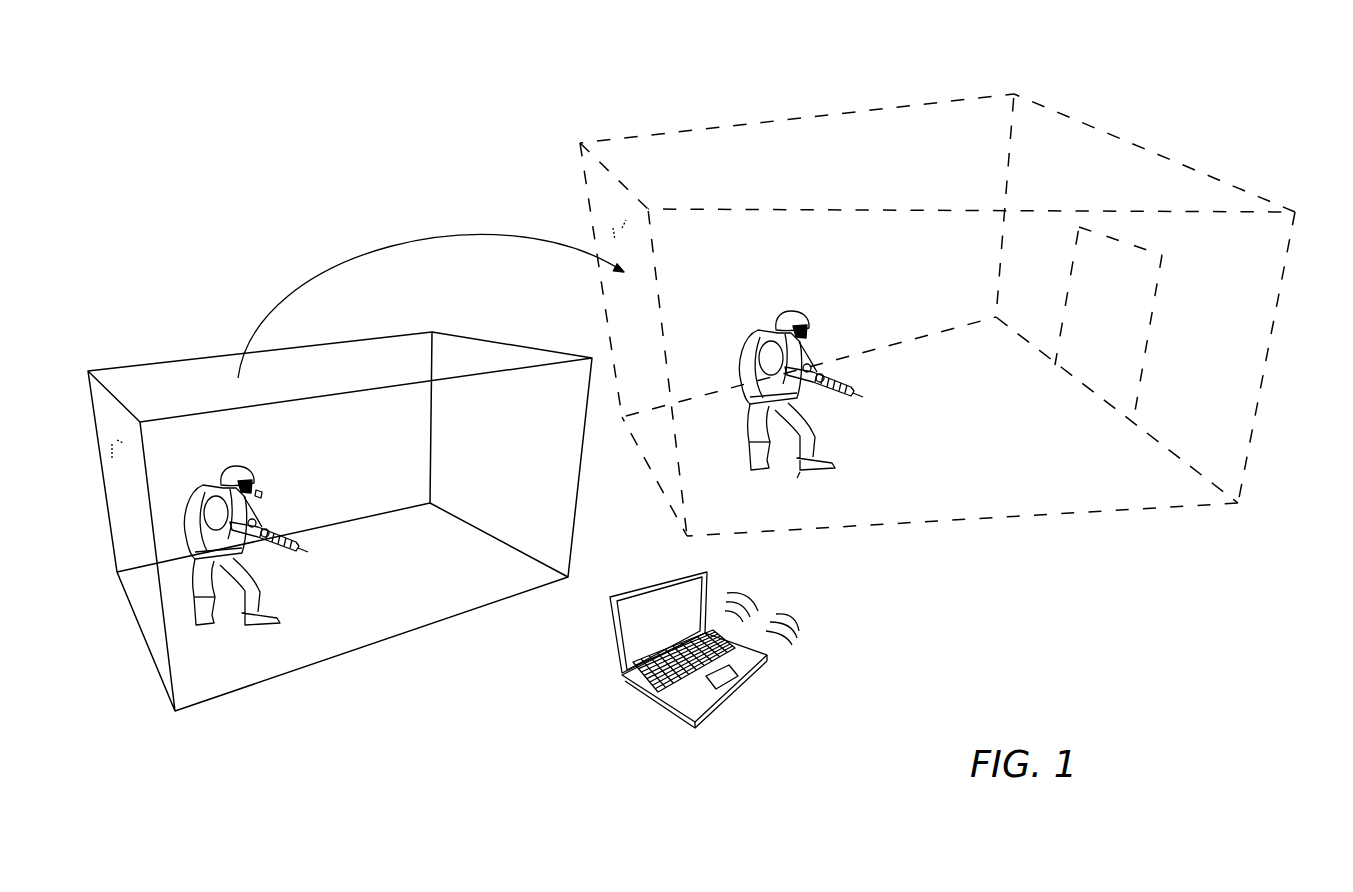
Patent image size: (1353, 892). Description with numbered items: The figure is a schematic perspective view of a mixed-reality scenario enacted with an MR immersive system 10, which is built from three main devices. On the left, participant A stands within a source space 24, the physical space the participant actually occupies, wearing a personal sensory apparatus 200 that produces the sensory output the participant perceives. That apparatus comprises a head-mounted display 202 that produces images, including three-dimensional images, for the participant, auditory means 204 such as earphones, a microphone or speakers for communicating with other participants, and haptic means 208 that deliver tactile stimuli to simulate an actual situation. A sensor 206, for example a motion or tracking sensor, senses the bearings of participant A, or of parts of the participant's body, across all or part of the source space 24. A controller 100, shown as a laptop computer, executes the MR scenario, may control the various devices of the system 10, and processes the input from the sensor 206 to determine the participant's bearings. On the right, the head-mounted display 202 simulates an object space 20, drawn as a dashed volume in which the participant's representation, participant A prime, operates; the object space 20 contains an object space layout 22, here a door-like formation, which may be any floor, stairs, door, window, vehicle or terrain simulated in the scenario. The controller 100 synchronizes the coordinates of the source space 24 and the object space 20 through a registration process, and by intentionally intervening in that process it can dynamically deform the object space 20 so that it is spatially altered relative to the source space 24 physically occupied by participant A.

The MR immersive system 10 is at (250, 272).
The object space 20 is at (636, 215).
The object space layout 22 is at (1157, 425).
The source space 24 is at (133, 428).
The controller 100 is at (613, 673).
The personal sensory apparatus 200 is at (222, 468).
The head-mounted display 202 is at (260, 486).
The auditory means 204 is at (233, 471).
The sensor 206 is at (255, 467).
The haptic means 208 is at (258, 498).